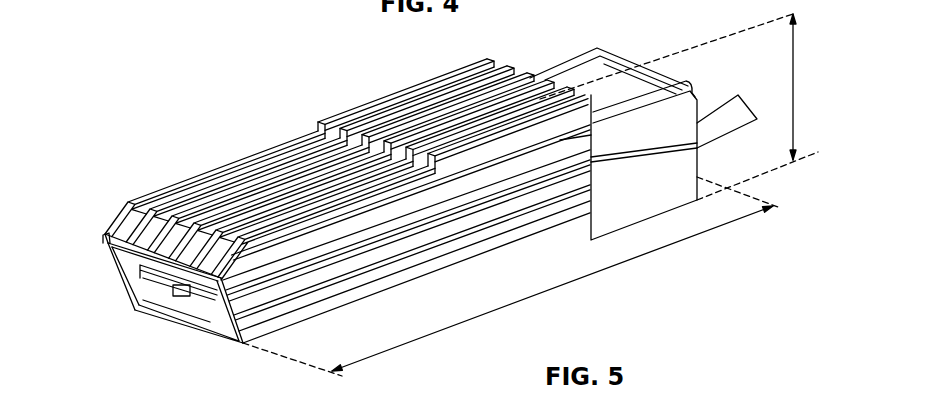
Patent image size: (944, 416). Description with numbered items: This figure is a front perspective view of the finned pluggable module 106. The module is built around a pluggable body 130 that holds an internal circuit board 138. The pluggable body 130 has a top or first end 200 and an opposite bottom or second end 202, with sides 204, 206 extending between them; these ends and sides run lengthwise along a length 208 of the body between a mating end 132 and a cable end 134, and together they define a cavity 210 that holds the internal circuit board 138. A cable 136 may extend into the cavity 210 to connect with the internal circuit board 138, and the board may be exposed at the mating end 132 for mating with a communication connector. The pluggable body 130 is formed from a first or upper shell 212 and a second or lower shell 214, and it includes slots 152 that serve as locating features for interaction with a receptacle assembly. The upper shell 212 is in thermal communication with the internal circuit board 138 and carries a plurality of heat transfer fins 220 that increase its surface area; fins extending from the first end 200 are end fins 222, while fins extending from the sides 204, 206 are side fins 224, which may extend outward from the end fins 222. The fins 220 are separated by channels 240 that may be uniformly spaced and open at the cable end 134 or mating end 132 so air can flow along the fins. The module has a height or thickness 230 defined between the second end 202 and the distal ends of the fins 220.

The pluggable module 106 is at (529, 34).
The pluggable body 130 is at (670, 167).
The mating end 132 is at (90, 245).
The cable end 134 is at (649, 43).
The cable 136 is at (714, 118).
The internal circuit board 138 is at (173, 279).
The slots 152 is at (368, 281).
The first end 200 is at (170, 258).
The second end 202 is at (197, 287).
The side 204 is at (110, 258).
The side 206 is at (245, 326).
The length 208 is at (553, 284).
The cavity 210 is at (222, 323).
The first shell 212 is at (653, 133).
The second shell 214 is at (650, 201).
The fins 220 is at (240, 163).
The end fins 222 is at (322, 145).
The side fins 224 is at (455, 186).
The thickness 230 is at (795, 97).
The channels 240 is at (178, 284).